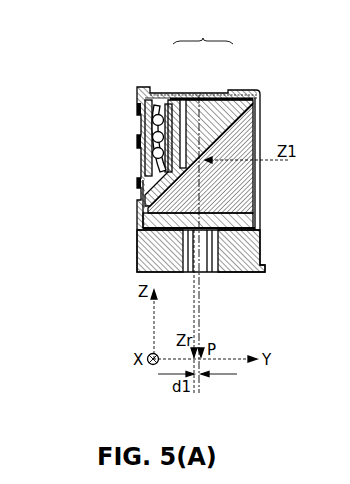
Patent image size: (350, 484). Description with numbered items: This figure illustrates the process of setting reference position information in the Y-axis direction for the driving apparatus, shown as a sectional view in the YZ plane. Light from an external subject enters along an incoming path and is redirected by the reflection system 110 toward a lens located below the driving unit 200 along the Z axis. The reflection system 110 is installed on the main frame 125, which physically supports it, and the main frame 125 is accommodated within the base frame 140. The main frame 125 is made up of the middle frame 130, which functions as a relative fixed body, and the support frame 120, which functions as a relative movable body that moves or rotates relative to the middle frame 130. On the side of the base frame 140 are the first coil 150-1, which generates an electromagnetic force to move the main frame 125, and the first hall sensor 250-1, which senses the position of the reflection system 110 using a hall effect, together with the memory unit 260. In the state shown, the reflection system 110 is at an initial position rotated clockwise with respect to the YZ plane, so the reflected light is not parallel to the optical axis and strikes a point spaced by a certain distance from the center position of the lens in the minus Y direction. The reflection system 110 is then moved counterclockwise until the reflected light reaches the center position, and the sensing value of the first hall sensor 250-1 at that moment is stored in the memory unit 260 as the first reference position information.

The reflection system 110 is at (250, 188).
The support frame 120 is at (220, 92).
The main frame 125 is at (203, 31).
The middle frame 130 is at (181, 93).
The base frame 140 is at (140, 87).
The first coil 150-1 is at (137, 113).
The driving unit 200 is at (139, 109).
The first hall sensor 250-1 is at (137, 141).
The memory unit 260 is at (137, 182).